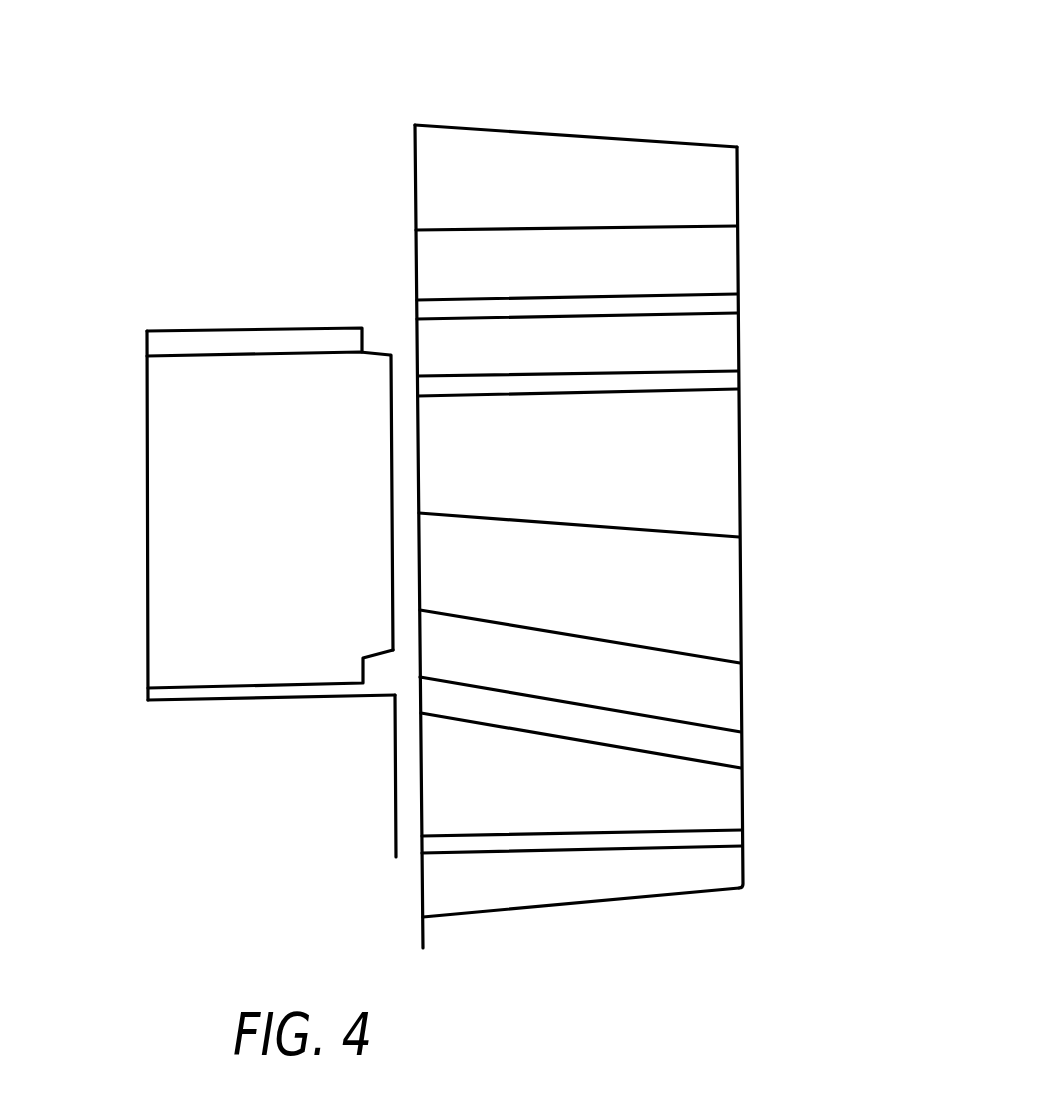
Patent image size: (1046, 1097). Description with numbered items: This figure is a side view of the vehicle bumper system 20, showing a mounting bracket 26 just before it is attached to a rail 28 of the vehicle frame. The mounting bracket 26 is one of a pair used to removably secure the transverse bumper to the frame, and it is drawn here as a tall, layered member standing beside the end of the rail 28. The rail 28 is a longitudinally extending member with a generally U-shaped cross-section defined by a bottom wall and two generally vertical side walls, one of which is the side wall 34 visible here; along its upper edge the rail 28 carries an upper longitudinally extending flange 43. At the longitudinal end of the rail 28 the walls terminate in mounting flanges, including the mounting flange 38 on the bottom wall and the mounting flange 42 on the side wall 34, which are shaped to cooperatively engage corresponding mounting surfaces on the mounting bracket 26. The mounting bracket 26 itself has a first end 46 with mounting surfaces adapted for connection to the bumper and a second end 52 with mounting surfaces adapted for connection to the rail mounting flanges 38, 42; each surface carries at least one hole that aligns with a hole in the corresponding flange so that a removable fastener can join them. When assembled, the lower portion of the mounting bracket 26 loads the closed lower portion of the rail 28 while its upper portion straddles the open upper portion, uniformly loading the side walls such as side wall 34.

The vehicle bumper system 20 is at (847, 130).
The mounting bracket 26 is at (618, 941).
The rail 28 is at (162, 292).
The side wall 34 is at (178, 507).
The mounting flange 38 is at (393, 782).
The mounting flange 42 is at (393, 393).
The upper longitudinally extending flange 43 is at (175, 345).
The first end 46 is at (742, 442).
The second end 52 is at (415, 222).